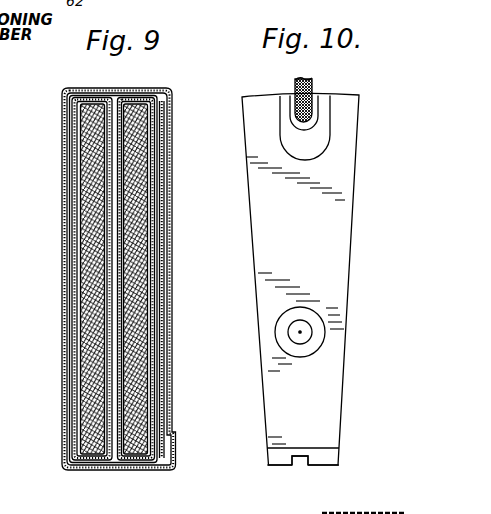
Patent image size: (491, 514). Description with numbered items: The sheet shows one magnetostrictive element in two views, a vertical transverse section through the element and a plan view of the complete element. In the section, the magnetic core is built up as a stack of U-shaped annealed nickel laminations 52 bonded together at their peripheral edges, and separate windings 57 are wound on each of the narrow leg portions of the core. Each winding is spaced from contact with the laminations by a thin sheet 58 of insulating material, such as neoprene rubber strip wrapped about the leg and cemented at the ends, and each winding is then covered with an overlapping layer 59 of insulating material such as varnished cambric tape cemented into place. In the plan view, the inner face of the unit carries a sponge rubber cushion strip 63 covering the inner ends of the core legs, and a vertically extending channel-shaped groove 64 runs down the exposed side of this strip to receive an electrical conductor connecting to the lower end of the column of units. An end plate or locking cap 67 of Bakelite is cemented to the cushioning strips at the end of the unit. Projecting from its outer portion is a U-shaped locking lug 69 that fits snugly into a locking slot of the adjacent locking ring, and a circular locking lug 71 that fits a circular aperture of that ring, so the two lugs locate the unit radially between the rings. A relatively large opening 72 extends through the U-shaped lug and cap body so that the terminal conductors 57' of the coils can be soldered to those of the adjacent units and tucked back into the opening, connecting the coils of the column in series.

In FIG. 9, the nickel laminations 52 is at (96, 291).
In FIG. 9, the windings 57 is at (115, 279).
In FIG. 9, the thin sheet of insulating material 58 is at (79, 402).
In FIG. 9, the overlapping layer of insulating material 59 is at (73, 272).
In FIG. 10, the terminal conductors 57' is at (325, 89).
In FIG. 10, the cushion strip 63 is at (327, 461).
In FIG. 10, the channel-shaped groove 64 is at (298, 458).
In FIG. 10, the end plate or locking cap 67 is at (337, 256).
In FIG. 10, the U-shaped locking lug 69 is at (331, 143).
In FIG. 10, the circular locking lug 71 is at (318, 331).
In FIG. 10, the opening or hole 72 is at (319, 120).